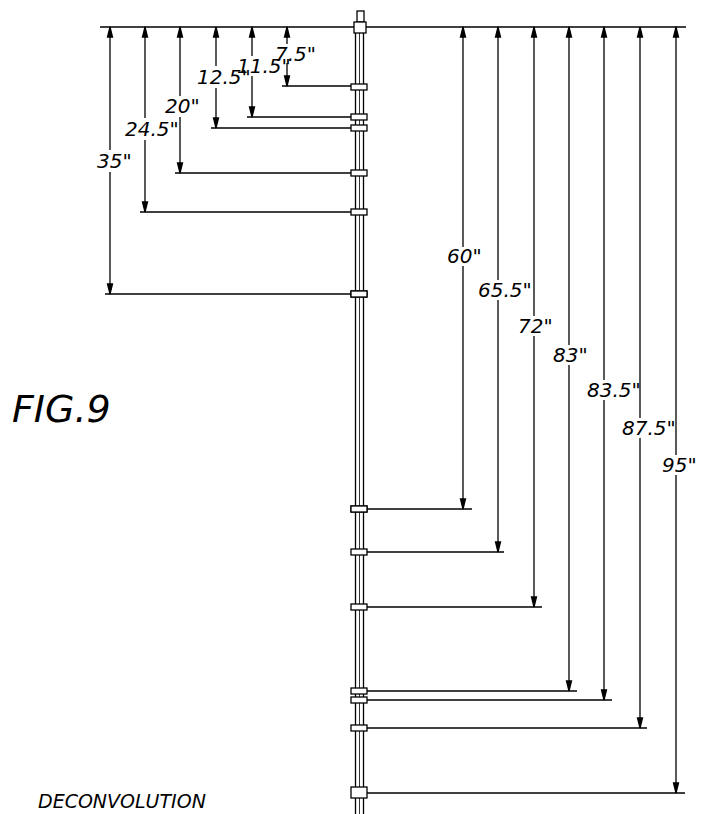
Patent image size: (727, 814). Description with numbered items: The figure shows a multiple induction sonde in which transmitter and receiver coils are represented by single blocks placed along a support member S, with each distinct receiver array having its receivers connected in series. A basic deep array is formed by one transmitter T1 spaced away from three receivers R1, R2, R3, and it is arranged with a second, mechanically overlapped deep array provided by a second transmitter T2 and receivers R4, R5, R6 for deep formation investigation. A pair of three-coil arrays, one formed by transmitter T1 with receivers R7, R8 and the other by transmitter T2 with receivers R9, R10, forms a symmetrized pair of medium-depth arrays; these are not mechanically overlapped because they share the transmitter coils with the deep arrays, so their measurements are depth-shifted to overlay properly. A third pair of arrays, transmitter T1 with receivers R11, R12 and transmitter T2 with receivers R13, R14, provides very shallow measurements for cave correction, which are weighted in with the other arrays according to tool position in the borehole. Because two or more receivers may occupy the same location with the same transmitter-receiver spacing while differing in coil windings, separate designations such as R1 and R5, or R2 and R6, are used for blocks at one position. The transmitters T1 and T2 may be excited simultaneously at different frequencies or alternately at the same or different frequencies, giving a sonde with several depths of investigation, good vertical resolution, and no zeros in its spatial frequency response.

The first transmitter T1 is at (367, 30).
The second transmitter T2 is at (351, 793).
The receiver R1 is at (367, 292).
The receiver R2 is at (351, 507).
The receiver R3 is at (351, 607).
The receiver R4 is at (367, 173).
The receiver R5 is at (367, 297).
The receiver R6 is at (351, 511).
The receiver R7 is at (367, 116).
The receiver R8 is at (367, 212).
The receiver R9 is at (351, 553).
The receiver R10 is at (351, 701).
The receiver R11 is at (367, 87).
The receiver R12 is at (367, 129).
The receiver R13 is at (351, 689).
The receiver R14 is at (351, 729).
The support member S is at (355, 388).